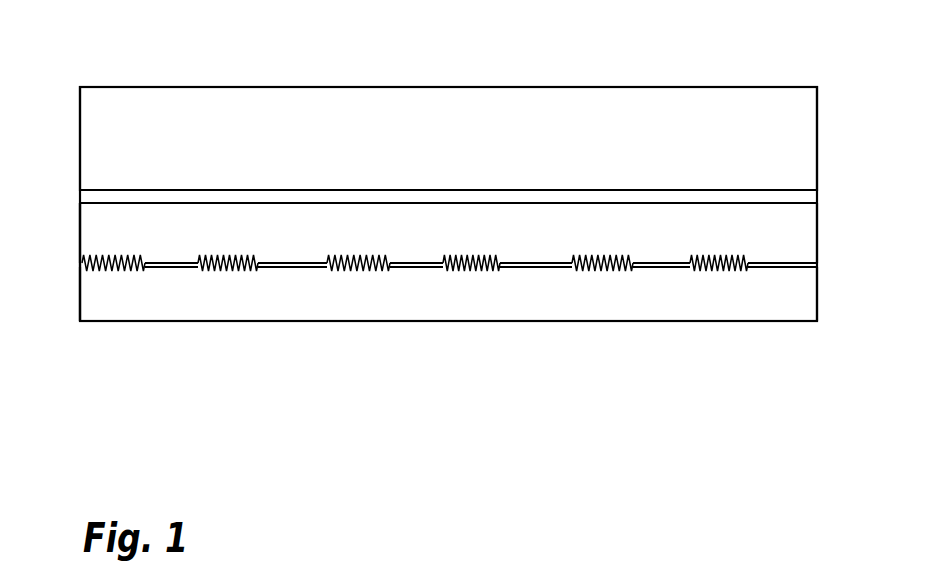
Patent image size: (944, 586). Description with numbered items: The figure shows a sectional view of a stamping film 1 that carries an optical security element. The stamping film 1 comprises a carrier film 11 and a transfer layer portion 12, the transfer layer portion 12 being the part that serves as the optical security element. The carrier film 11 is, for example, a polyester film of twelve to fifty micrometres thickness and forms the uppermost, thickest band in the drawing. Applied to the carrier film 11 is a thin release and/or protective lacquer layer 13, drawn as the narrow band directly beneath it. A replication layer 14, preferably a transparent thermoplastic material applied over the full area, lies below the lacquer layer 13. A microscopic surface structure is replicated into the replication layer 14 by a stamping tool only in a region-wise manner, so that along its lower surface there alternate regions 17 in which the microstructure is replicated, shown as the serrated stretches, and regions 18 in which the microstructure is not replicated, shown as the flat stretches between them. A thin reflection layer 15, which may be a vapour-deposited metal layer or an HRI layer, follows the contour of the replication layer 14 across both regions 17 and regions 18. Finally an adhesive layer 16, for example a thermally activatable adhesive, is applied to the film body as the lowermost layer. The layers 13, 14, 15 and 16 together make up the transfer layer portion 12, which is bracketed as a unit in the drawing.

The stamping film 1 is at (478, 85).
The carrier film 11 is at (95, 126).
The transfer layer portion 12 is at (80, 203).
The release and/or protective lacquer layer 13 is at (800, 197).
The replication layer 14 is at (805, 238).
The reflection layer 15 is at (817, 267).
The adhesive layer 16 is at (805, 308).
The regions in which the microstructure is replicated 17 is at (120, 272).
The regions in which the microstructure is not replicated 18 is at (175, 270).